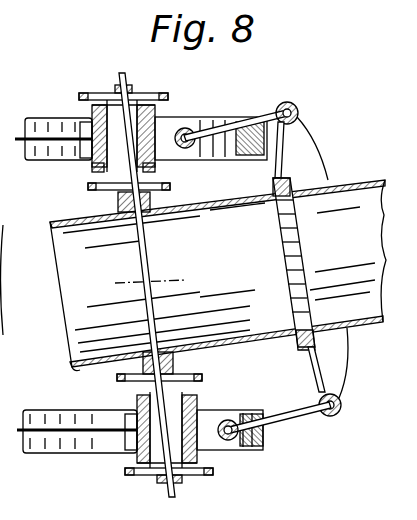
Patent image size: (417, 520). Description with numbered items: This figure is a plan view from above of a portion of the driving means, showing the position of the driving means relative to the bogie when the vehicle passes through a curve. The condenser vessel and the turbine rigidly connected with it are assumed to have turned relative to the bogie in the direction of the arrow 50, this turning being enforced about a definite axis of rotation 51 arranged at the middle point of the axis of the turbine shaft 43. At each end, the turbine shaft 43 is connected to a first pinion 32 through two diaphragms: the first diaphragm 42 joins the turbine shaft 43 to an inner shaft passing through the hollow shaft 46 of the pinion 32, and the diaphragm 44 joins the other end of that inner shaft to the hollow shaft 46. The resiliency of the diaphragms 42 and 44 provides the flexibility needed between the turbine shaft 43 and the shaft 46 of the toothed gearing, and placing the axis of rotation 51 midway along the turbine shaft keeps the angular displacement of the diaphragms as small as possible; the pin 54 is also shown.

The first pinion 32 is at (95, 110).
The first diaphragm 42 is at (168, 185).
The turbine shaft 43 is at (150, 200).
The diaphragm 44 is at (140, 108).
The hollow shaft 46 is at (100, 172).
The arrow 50 is at (258, 264).
The axis of rotation 51 is at (148, 282).
The crank pin 54 is at (188, 130).